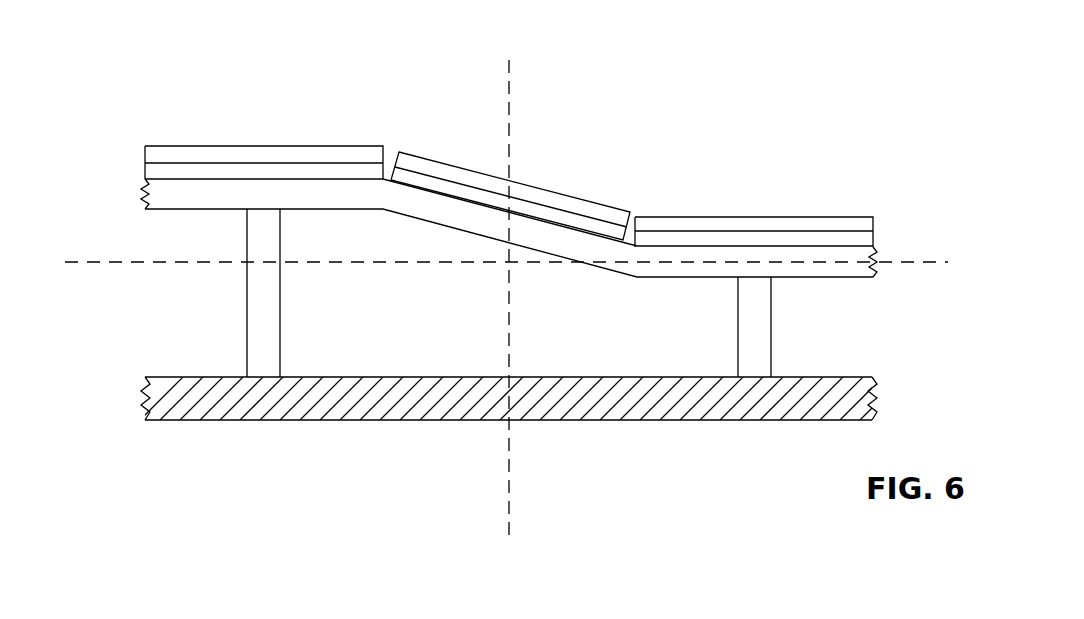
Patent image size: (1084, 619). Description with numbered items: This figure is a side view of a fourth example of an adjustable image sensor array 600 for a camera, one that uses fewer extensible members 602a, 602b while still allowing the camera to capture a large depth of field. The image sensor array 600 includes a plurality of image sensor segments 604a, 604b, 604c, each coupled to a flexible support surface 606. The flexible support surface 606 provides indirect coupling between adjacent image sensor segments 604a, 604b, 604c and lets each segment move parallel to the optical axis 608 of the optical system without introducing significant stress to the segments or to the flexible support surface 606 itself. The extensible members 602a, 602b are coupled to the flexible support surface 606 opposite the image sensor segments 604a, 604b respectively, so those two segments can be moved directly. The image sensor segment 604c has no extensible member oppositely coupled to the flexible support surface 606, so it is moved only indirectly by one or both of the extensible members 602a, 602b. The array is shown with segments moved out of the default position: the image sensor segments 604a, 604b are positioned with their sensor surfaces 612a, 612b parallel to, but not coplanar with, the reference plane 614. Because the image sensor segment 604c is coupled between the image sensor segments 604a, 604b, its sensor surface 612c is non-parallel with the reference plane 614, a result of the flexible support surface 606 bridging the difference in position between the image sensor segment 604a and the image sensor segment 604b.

The image sensor array 600 is at (780, 44).
The extensible member 602a is at (268, 327).
The extensible member 602b is at (757, 327).
The image sensor segment 604a is at (152, 157).
The image sensor segment 604b is at (866, 225).
The image sensor segment 604c is at (420, 165).
The flexible support surface 606 is at (872, 268).
The optical axis 608 is at (512, 90).
The sensor surface 612a is at (264, 143).
The sensor surface 612b is at (737, 214).
The sensor surface 612c is at (508, 180).
The reference plane 614 is at (92, 262).